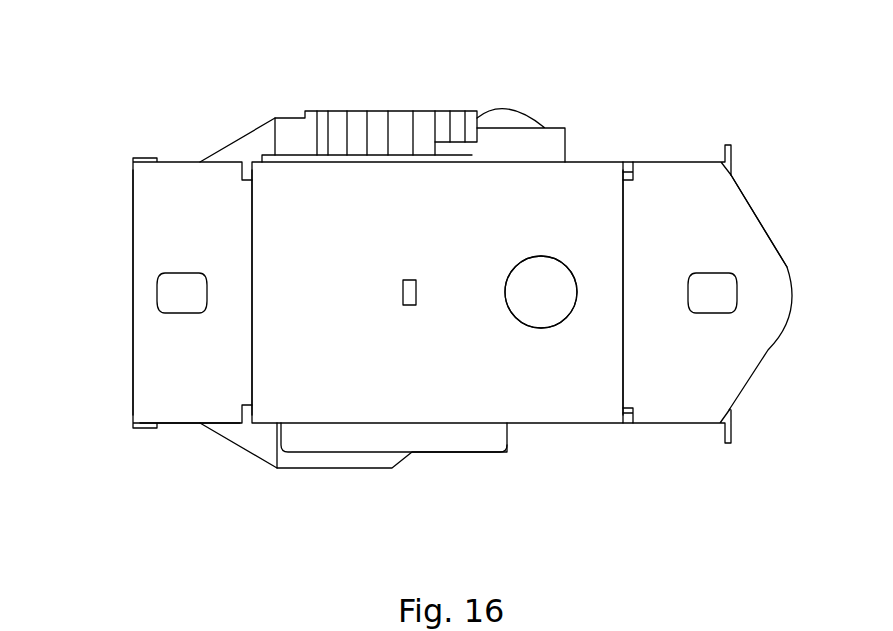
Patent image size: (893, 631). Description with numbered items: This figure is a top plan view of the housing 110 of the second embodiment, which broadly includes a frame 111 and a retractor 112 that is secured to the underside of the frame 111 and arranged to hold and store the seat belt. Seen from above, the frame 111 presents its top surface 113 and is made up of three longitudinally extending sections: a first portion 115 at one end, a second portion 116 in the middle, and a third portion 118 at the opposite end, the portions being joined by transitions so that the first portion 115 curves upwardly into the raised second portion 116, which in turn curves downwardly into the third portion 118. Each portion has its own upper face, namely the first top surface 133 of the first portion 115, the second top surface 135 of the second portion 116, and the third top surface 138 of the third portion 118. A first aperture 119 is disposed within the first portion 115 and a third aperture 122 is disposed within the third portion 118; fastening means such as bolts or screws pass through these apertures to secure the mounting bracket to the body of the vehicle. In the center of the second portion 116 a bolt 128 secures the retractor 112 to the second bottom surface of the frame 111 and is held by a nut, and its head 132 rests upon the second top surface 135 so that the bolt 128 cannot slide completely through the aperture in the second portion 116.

The housing 110 is at (602, 80).
The frame 111 is at (184, 192).
The retractor 112 is at (400, 110).
The top surface 113 is at (268, 398).
The first portion 115 is at (173, 395).
The second portion 116 is at (557, 400).
The third portion 118 is at (773, 287).
The first aperture 119 is at (178, 290).
The third aperture 122 is at (716, 299).
The bolt 128 is at (545, 288).
The head 132 is at (560, 297).
The first top surface 133 is at (147, 320).
The second top surface 135 is at (272, 190).
The third top surface 138 is at (738, 208).